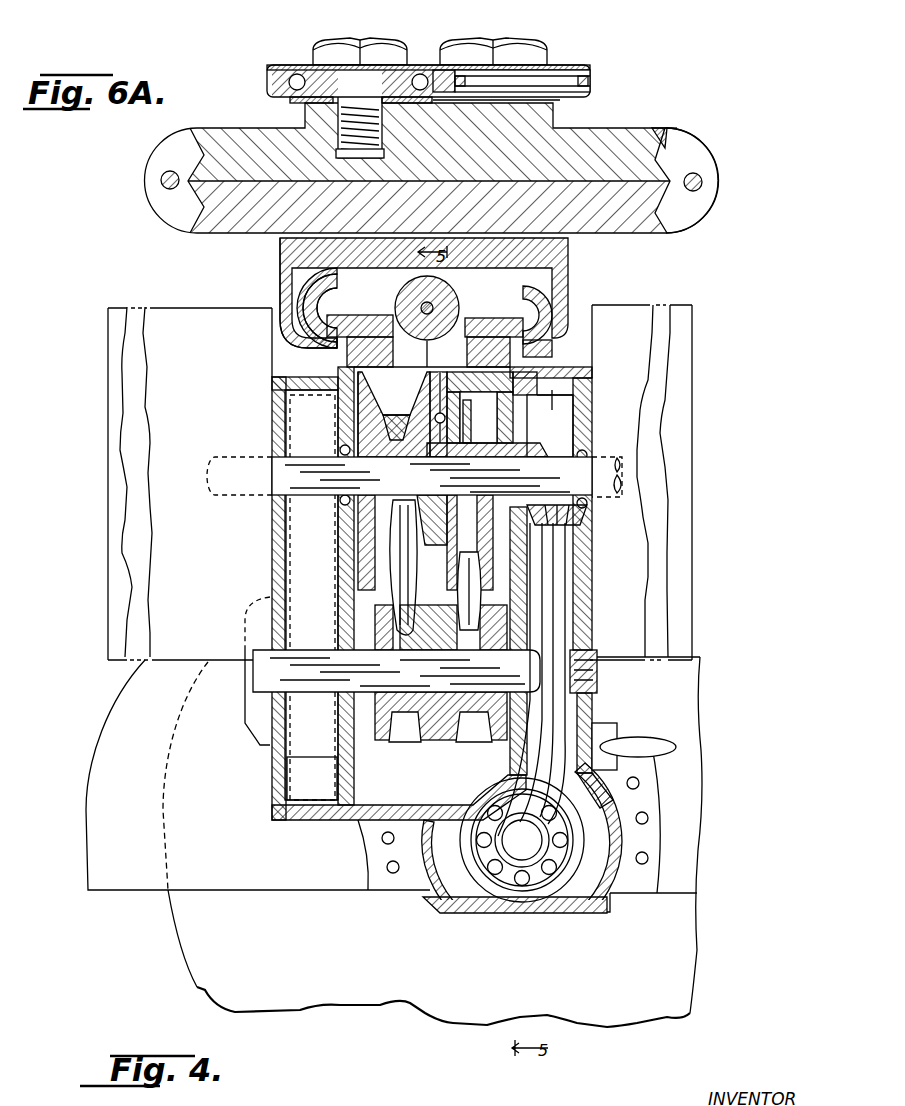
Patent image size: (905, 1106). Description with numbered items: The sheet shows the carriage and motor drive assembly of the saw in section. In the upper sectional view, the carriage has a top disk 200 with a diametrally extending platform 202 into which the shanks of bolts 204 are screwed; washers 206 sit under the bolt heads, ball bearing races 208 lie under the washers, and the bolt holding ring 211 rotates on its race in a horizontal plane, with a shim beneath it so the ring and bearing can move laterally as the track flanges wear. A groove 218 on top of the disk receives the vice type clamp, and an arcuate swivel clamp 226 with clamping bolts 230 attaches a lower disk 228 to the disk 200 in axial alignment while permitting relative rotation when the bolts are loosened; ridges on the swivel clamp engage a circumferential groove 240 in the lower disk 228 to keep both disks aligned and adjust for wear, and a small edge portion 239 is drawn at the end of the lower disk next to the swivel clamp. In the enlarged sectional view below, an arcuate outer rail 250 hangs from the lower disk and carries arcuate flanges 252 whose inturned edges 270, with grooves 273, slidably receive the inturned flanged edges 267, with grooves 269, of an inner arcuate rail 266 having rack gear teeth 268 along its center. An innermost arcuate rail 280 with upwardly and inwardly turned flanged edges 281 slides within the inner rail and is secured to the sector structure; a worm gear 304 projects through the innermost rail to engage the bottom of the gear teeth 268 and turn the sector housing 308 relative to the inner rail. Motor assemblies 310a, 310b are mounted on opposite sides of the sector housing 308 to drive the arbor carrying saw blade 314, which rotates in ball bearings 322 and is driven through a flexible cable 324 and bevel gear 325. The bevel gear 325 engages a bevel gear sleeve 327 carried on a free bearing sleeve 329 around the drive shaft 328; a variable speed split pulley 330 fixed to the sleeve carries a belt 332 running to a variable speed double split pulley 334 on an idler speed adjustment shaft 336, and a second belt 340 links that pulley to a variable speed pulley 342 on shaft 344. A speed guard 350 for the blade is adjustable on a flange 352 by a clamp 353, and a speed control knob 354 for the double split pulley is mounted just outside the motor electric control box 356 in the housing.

In FIG. 6A, the top disk 200 is at (240, 160).
In FIG. 6A, the platform 202 is at (557, 117).
In FIG. 6A, the bolts 204 is at (306, 113).
In FIG. 6A, the washers 206 is at (308, 67).
In FIG. 6A, the ball bearing races 208 is at (410, 63).
In FIG. 6A, the bolt holding ring 211 is at (283, 80).
In FIG. 6A, the groove 218 is at (683, 130).
In FIG. 6A, the arcuate swivel clamp 226 is at (710, 150).
In FIG. 6A, the lower disk 228 is at (605, 210).
In FIG. 6A, the clamping bolts 230 is at (702, 182).
In FIG. 6A, the chamfer 239 is at (660, 132).
In FIG. 6A, the circumferential groove 240 is at (663, 215).
In FIG. 4, the arcuate outer rail 250 is at (290, 241).
In FIG. 4, the arcuate flanges 252 is at (312, 300).
In FIG. 4, the inner arcuate rail 266 is at (302, 282).
In FIG. 4, the inturned flanged edges 267 is at (310, 338).
In FIG. 4, the gear teeth 268 is at (400, 282).
In FIG. 4, the grooves 269 is at (300, 325).
In FIG. 4, the inturned edges 270 is at (333, 357).
In FIG. 4, the grooves 273 is at (347, 340).
In FIG. 4, the innermost arcuate rail 280 is at (372, 322).
In FIG. 4, the flanged edges 281 is at (519, 321).
In FIG. 4, the worm gear 304 is at (447, 300).
In FIG. 4, the sector housing 308 is at (333, 818).
In FIG. 4, the motor assembly 310a is at (625, 315).
In FIG. 4, the motor assembly 310b is at (215, 315).
In FIG. 4, the saw blade 314 is at (310, 1008).
In FIG. 4, the ball bearings 322 is at (495, 875).
In FIG. 4, the flexible cable 324 is at (567, 567).
In FIG. 4, the bevel gear 325 is at (577, 525).
In FIG. 4, the bevel gear sleeve 327 is at (463, 440).
In FIG. 4, the drive shaft 328 is at (608, 457).
In FIG. 4, the free bearing sleeve 329 is at (440, 457).
In FIG. 4, the variable speed split pulley 330 is at (505, 457).
In FIG. 4, the belt 332 is at (481, 407).
In FIG. 4, the variable speed double split pulley 334 is at (460, 742).
In FIG. 4, the idler speed adjustment shaft 336 is at (260, 690).
In FIG. 4, the belt 340 is at (405, 742).
In FIG. 4, the variable speed pulley 342 is at (372, 405).
In FIG. 4, the shaft 344 is at (305, 486).
In FIG. 4, the speed guard 350 is at (620, 730).
In FIG. 4, the flange 352 is at (645, 742).
In FIG. 4, the clamp 353 is at (597, 730).
In FIG. 4, the speed control knob 354 is at (257, 738).
In FIG. 4, the motor electric control box 356 is at (285, 810).